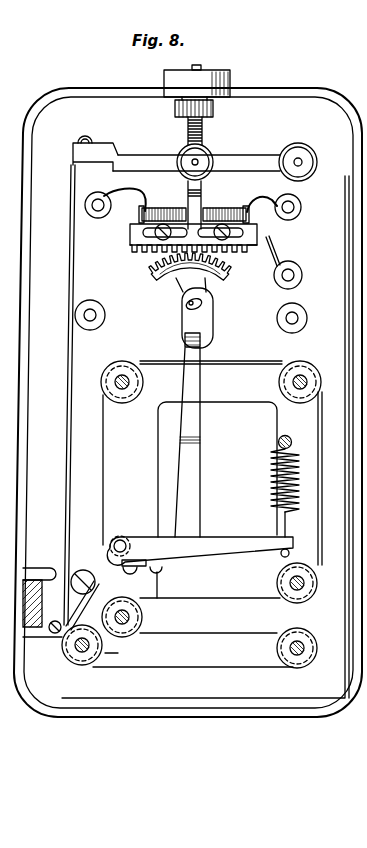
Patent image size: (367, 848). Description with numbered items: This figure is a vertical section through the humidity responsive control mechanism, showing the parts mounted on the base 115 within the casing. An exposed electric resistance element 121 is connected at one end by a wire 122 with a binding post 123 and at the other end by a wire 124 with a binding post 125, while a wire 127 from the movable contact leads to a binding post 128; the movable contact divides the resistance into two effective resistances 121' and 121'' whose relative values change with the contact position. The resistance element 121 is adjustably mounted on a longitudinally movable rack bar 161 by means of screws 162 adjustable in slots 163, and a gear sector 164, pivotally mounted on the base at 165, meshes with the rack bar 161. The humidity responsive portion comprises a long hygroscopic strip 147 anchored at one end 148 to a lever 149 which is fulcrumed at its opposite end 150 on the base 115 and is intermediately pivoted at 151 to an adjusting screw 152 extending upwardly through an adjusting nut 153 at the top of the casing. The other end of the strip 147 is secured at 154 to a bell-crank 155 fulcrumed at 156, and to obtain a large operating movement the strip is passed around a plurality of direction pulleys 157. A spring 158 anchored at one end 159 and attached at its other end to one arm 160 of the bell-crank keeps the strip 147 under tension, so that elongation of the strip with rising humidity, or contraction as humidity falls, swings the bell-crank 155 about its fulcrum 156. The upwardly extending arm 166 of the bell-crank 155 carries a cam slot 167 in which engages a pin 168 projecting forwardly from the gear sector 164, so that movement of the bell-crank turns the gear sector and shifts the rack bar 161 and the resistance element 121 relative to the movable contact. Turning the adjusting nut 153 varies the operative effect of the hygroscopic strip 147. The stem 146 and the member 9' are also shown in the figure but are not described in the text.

The base 115 is at (292, 99).
The adjusting nut 153 is at (229, 76).
The adjusting screw 152 is at (203, 130).
The pivot 151 is at (198, 160).
The fulcrum end of lever 150 is at (299, 158).
The anchored end of hygroscopic strip 148 is at (113, 150).
The lever 149 is at (122, 153).
The hygroscopic strip 147 is at (70, 300).
The direction pulleys 157 is at (117, 366).
The stem 146 is at (201, 192).
The electric resistance element 121 is at (123, 214).
The first effective resistance 121' is at (162, 206).
The second effective resistance 121'' is at (226, 206).
The binding post 123 is at (100, 212).
The wire 122 is at (143, 190).
The binding post 125 is at (302, 204).
The wire 124 is at (267, 192).
The rack bar 161 is at (142, 236).
The slots 163 is at (152, 237).
The screws 162 is at (159, 239).
The gear sector 164 is at (183, 260).
The cam slot 167 is at (207, 311).
The pin 168 is at (187, 304).
The pivot of gear sector 165 is at (186, 342).
The upwardly extending arm 166 is at (199, 434).
The bell-crank 155 is at (207, 551).
The fulcrum 156 is at (113, 537).
The securing point of strip 154 is at (123, 569).
The spring anchor 159 is at (279, 442).
The spring 158 is at (271, 503).
The arm of bell-crank 160 is at (283, 528).
The wire 127 is at (281, 255).
The binding post 128 is at (303, 278).
The bracket 9' is at (47, 628).